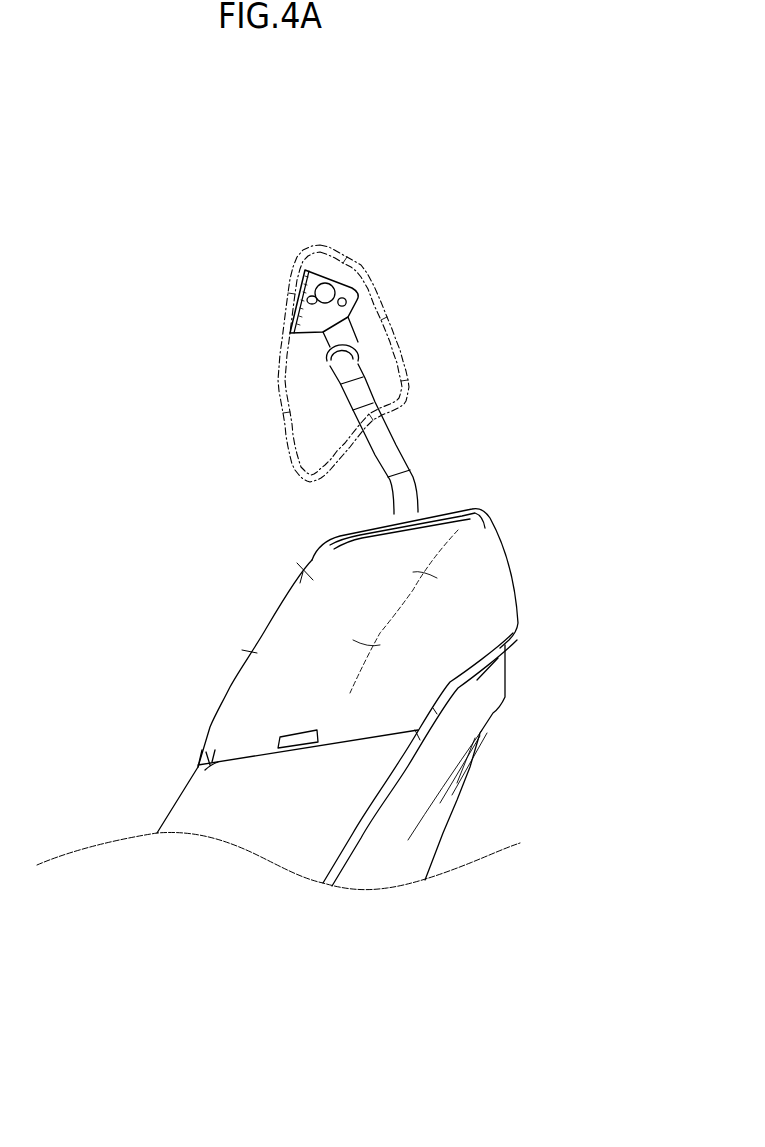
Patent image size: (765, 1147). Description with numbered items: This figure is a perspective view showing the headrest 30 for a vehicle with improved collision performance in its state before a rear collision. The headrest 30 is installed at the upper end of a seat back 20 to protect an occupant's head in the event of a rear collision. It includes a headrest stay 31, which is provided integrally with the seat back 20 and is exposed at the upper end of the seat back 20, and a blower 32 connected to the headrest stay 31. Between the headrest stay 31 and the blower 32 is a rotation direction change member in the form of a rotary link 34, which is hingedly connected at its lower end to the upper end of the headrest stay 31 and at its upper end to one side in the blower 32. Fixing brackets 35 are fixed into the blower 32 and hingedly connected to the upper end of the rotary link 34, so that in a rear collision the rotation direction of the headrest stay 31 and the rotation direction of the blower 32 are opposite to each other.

The seat back 20 is at (485, 593).
The headrest 30 is at (363, 258).
The headrest stay 31 is at (388, 453).
The blower 32 is at (390, 317).
The rotary link 34 is at (322, 338).
The fixing brackets 35 is at (318, 314).